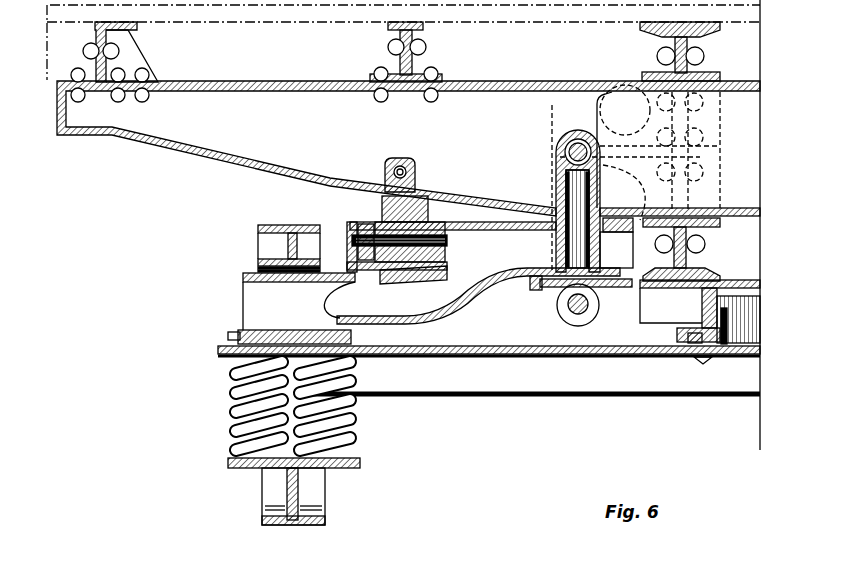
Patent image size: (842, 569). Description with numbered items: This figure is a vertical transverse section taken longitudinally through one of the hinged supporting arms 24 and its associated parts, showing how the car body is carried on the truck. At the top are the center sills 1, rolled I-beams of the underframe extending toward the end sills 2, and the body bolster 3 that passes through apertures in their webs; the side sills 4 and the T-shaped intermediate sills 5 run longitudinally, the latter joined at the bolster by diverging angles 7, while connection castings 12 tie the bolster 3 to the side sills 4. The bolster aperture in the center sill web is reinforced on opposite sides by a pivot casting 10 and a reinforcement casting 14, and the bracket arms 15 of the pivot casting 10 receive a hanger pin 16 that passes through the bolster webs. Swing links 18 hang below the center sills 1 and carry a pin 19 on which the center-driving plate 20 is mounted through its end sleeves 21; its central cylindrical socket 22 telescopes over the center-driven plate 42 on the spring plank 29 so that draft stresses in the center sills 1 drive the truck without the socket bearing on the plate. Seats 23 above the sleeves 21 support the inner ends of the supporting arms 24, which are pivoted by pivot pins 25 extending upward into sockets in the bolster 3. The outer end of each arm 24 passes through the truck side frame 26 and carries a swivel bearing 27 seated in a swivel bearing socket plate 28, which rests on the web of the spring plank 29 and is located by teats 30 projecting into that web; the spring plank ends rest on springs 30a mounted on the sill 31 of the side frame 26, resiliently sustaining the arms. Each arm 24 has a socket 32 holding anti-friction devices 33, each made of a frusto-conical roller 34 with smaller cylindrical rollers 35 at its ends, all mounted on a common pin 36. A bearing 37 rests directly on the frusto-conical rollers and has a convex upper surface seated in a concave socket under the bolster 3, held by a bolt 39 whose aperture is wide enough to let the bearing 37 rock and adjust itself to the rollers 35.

The center sills 1 is at (712, 28).
The end sills 2 is at (760, 5).
The body bolster 3 is at (310, 82).
The side sills 4 is at (96, 42).
The intermediate sills 5 is at (392, 30).
The angles 7 is at (400, 62).
The pivot casting 10 is at (652, 68).
The connection castings 12 is at (112, 56).
The reinforcement casting 14 is at (708, 78).
The bracket arms 15 is at (612, 92).
The hanger pin 16 is at (572, 152).
The swing links 18 is at (575, 135).
The pin 19 is at (552, 354).
The center-driving plate 20 is at (640, 316).
The sleeves 21 is at (562, 288).
The cylindrical socket 22 is at (697, 314).
The seats 23 is at (531, 280).
The hinged supporting arms 24 is at (448, 298).
The pivot pins 25 is at (580, 190).
The side frames 26 is at (259, 235).
The swivel bearing 27 is at (222, 336).
The swivel bearing socket plate 28 is at (223, 344).
The spring plank 29 is at (495, 392).
The teats 30 is at (290, 345).
The springs 30a is at (233, 425).
The sill 31 is at (230, 470).
The sockets 32 is at (395, 270).
The anti-friction devices 33 is at (372, 220).
The frusto-conical roller 34 is at (443, 207).
The cylindrical rollers 35 is at (440, 220).
The pin 36 is at (448, 244).
The bearing 37 is at (388, 182).
The bolt 39 is at (405, 165).
The center-driven plate 42 is at (705, 362).